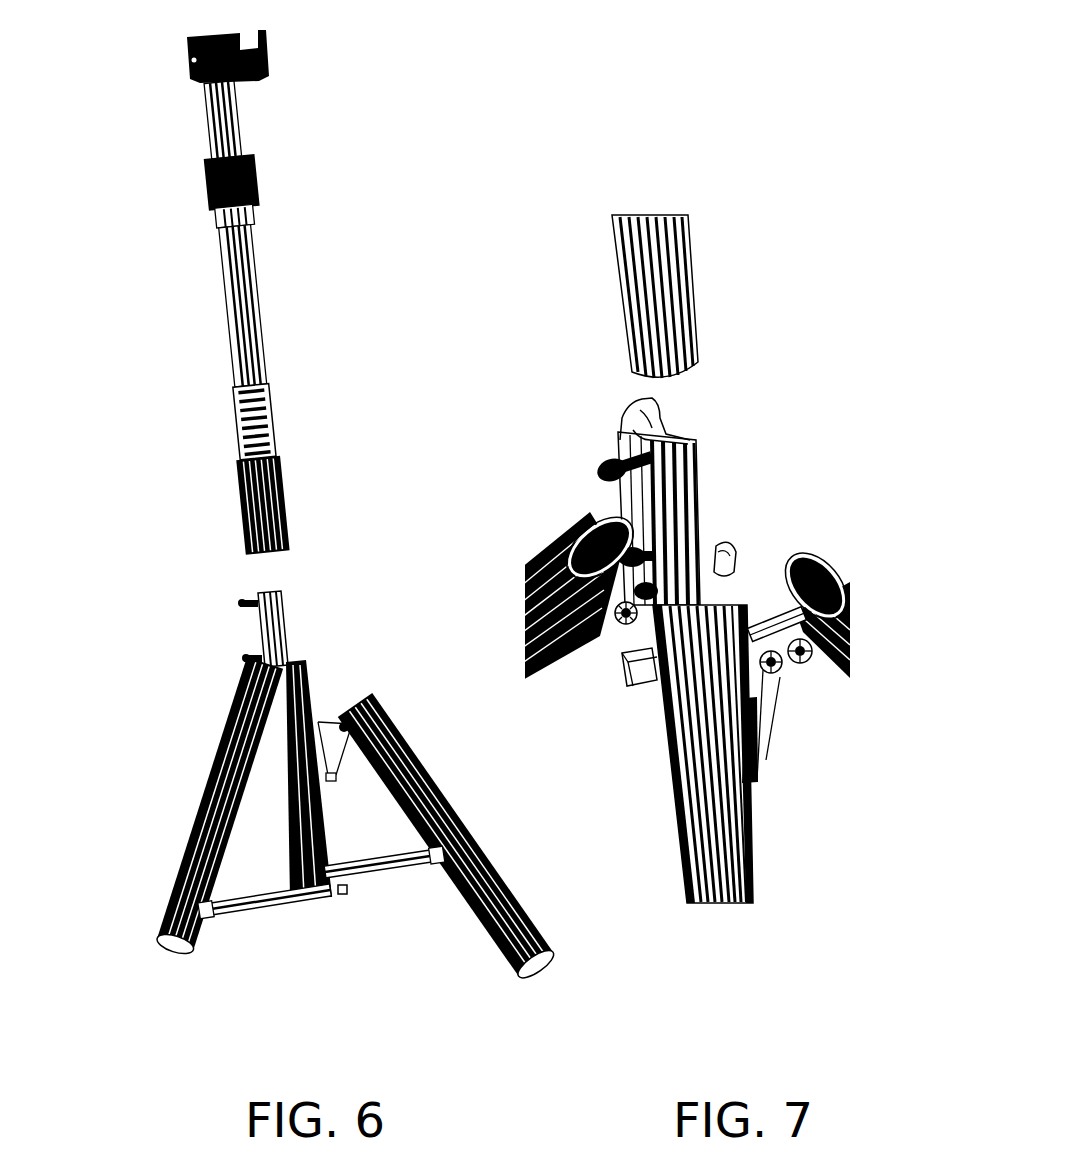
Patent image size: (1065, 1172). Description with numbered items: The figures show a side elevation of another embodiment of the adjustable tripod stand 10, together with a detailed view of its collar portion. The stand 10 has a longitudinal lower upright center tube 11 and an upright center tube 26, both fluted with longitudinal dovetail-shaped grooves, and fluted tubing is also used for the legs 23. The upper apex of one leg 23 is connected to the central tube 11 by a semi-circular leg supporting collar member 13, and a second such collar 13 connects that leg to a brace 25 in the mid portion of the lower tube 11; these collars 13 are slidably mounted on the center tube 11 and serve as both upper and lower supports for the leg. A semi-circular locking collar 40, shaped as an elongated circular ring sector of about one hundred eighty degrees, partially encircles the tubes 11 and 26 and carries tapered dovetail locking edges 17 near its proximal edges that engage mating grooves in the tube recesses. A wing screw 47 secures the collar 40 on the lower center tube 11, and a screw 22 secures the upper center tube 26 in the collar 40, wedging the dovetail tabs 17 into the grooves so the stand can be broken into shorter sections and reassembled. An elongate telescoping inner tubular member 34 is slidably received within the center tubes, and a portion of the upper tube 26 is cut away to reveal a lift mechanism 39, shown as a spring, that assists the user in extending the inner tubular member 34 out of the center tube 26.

In FIG. 6, the adjustable tripod stand 10 is at (116, 350).
In FIG. 6, the telescoping inner tubular member 34 is at (236, 118).
In FIG. 6, the lift mechanism 39 is at (272, 425).
In FIG. 6, the upright center tube 26 is at (284, 503).
In FIG. 7, the upright center tube 26 is at (690, 273).
In FIG. 6, the screw 22 is at (238, 597).
In FIG. 7, the screw 22 is at (606, 462).
In FIG. 6, the semi-circular locking collar 40 is at (268, 637).
In FIG. 7, the semi-circular locking collar 40 is at (698, 502).
In FIG. 6, the wing screw 47 is at (246, 659).
In FIG. 7, the wing screw 47 is at (628, 571).
In FIG. 6, the lower upright center tube 11 is at (304, 671).
In FIG. 7, the lower upright center tube 11 is at (722, 564).
In FIG. 6, the legs 23 is at (192, 827).
In FIG. 7, the legs 23 is at (527, 568).
In FIG. 6, the brace 25 is at (270, 910).
In FIG. 6, the semi-circular leg supporting collar member 13 is at (349, 895).
In FIG. 7, the semi-circular leg supporting collar member 13 is at (830, 670).
In FIG. 7, the locking edges 17 is at (645, 420).